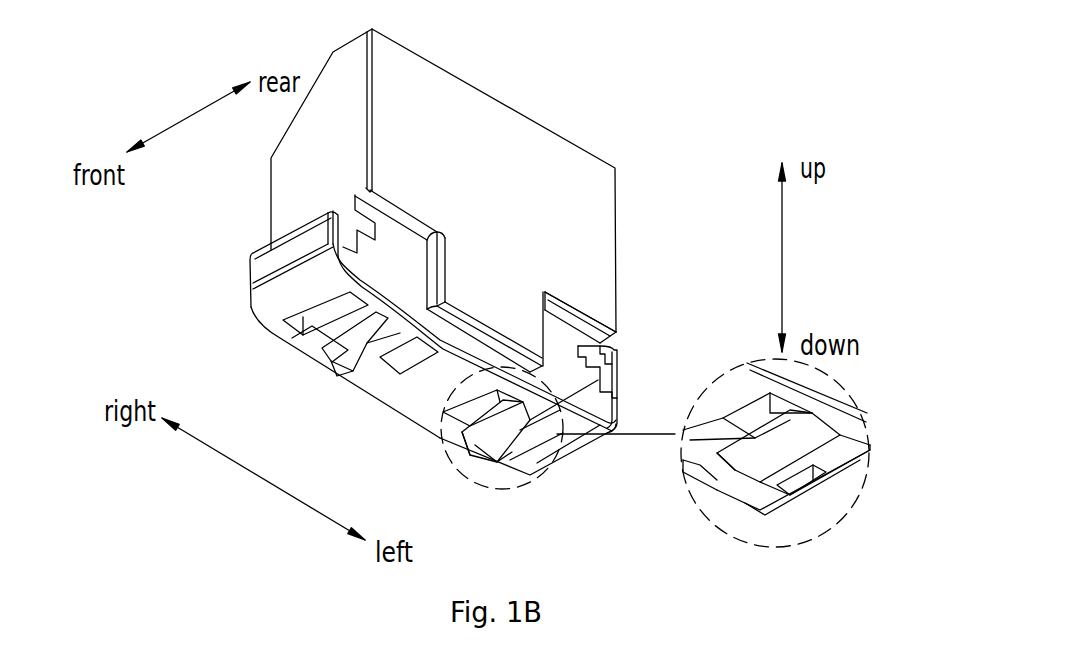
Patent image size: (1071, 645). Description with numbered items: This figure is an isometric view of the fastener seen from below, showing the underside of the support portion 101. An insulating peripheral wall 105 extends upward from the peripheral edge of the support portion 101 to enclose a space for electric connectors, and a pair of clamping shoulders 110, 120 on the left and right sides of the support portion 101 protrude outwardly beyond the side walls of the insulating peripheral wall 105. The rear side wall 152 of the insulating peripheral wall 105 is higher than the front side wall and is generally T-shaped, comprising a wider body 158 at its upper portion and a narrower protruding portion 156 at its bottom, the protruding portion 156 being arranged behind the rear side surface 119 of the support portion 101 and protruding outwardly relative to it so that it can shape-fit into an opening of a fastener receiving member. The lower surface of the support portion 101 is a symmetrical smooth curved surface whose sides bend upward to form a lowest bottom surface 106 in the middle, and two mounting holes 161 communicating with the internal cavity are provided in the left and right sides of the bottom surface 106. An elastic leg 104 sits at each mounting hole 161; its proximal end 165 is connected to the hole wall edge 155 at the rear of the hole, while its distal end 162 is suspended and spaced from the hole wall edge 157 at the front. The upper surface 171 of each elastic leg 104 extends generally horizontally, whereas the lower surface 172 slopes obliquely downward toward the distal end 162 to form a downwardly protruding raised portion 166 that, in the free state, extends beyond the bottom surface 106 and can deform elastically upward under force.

The support portion 101 is at (255, 309).
The elastic leg 104 is at (318, 354).
The insulating peripheral wall 105 is at (545, 158).
The bottom surface 106 is at (416, 404).
The clamping shoulder 110 is at (608, 360).
The rear side surface 119 is at (572, 362).
The clamping shoulder 120 is at (290, 252).
The rear side wall 152 is at (704, 247).
The hole wall edge 155 is at (840, 435).
The protruding portion 156 is at (518, 318).
The hole wall edge 157 is at (700, 465).
The body 158 is at (605, 228).
The mounting hole 161 is at (333, 360).
The distal end 162 is at (717, 482).
The proximal end 165 is at (825, 423).
The raised portion 166 is at (745, 503).
The upper surface 171 is at (720, 413).
The lower surface 172 is at (780, 485).